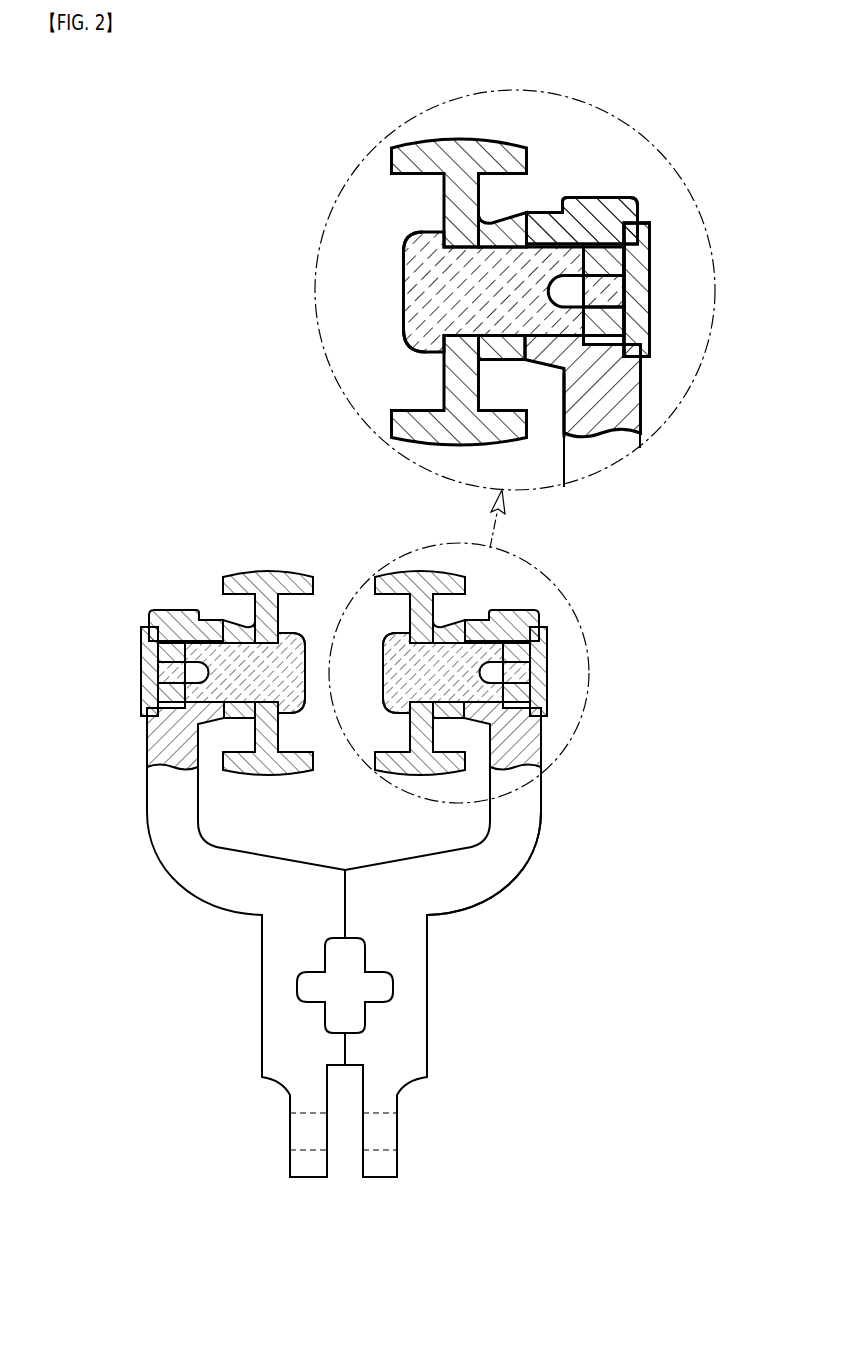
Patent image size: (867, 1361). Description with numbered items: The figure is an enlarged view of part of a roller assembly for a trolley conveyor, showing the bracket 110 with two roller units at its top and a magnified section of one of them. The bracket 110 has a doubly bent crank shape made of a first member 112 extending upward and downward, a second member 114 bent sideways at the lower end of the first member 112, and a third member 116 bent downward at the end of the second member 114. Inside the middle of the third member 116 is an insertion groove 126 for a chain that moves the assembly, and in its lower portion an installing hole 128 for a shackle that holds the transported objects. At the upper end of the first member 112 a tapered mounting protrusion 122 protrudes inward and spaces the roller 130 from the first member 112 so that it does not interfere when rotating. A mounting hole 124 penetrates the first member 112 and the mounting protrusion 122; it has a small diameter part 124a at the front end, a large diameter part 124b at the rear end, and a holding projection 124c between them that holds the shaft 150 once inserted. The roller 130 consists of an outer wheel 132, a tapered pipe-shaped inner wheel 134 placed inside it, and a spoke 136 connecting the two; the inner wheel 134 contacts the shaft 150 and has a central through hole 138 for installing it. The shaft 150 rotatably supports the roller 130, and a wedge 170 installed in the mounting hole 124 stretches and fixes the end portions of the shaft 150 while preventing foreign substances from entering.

The bracket 110 is at (158, 868).
The first member 112 is at (640, 400).
The second member 114 is at (530, 880).
The third member 116 is at (428, 940).
The mounting protrusion 122 is at (553, 212).
The mounting hole 124 is at (710, 105).
The small diameter part 124a is at (585, 230).
The large diameter part 124b is at (645, 255).
The holding projection 124c is at (582, 252).
The insertion groove 126 is at (394, 987).
The installing hole 128 is at (316, 1113).
The roller 130 is at (412, 150).
The outer wheel 132 is at (457, 443).
The inner wheel 134 is at (515, 365).
The spoke 136 is at (445, 372).
The through hole 138 is at (410, 265).
The shaft 150 is at (402, 292).
The wedge 170 is at (652, 322).